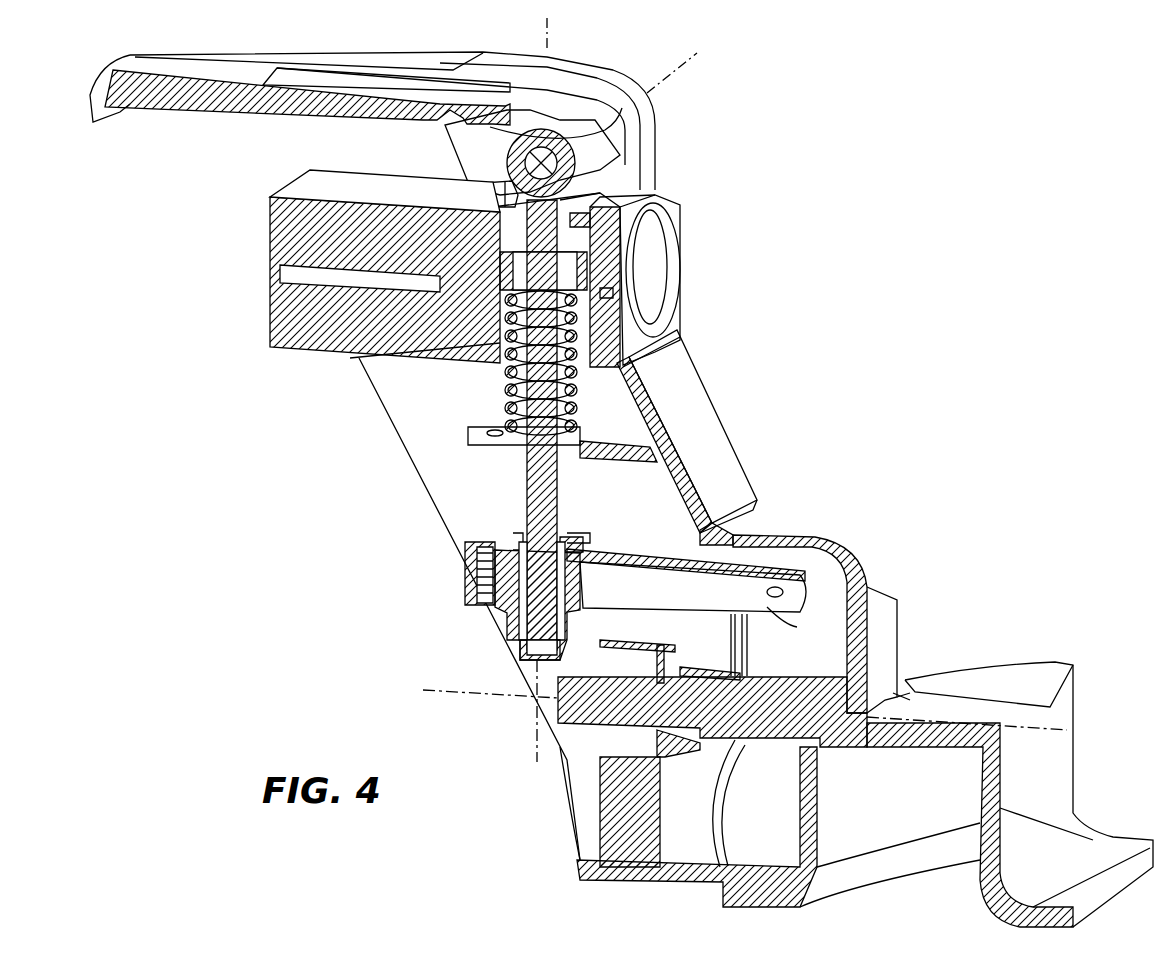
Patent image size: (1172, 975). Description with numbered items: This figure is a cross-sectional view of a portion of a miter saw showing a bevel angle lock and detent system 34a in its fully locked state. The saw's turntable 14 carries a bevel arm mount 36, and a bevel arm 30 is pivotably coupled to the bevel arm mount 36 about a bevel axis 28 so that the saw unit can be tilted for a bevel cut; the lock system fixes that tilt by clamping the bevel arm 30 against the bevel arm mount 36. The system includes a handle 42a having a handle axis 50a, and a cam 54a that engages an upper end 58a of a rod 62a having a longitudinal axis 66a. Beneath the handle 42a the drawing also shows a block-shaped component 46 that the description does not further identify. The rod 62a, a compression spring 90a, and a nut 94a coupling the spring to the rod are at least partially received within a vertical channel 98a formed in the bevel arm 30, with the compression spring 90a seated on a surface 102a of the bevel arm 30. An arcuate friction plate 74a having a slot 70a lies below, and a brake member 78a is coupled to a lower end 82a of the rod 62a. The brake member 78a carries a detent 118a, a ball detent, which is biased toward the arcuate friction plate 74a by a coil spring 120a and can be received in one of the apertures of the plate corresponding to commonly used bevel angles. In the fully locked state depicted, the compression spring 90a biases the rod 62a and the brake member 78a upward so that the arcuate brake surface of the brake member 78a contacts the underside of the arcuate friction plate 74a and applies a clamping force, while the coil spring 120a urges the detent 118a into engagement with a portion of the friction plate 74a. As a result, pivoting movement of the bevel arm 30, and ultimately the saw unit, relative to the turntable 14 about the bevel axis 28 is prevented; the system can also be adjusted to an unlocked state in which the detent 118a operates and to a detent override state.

The turntable 14 is at (1000, 673).
The bevel axis 28 is at (455, 695).
The bevel arm 30 is at (680, 377).
The bevel angle lock and detent system 34a is at (802, 176).
The bevel arm mount 36 is at (840, 557).
The handle 42a is at (347, 88).
The block 46 is at (300, 187).
The handle axis 50a is at (540, 160).
The cam 54a is at (607, 200).
The upper end 58a is at (623, 213).
The rod 62a is at (533, 477).
The longitudinal axis 66a is at (530, 733).
The slot 70a is at (575, 547).
The arcuate friction plate 74a is at (767, 607).
The brake member 78a is at (503, 610).
The lower end 82a is at (520, 660).
The compression spring 90a is at (510, 384).
The nut 94a is at (580, 260).
The vertical channel 98a is at (350, 358).
The surface 102a is at (480, 423).
The detent 118a is at (487, 547).
The coil spring 120a is at (463, 585).